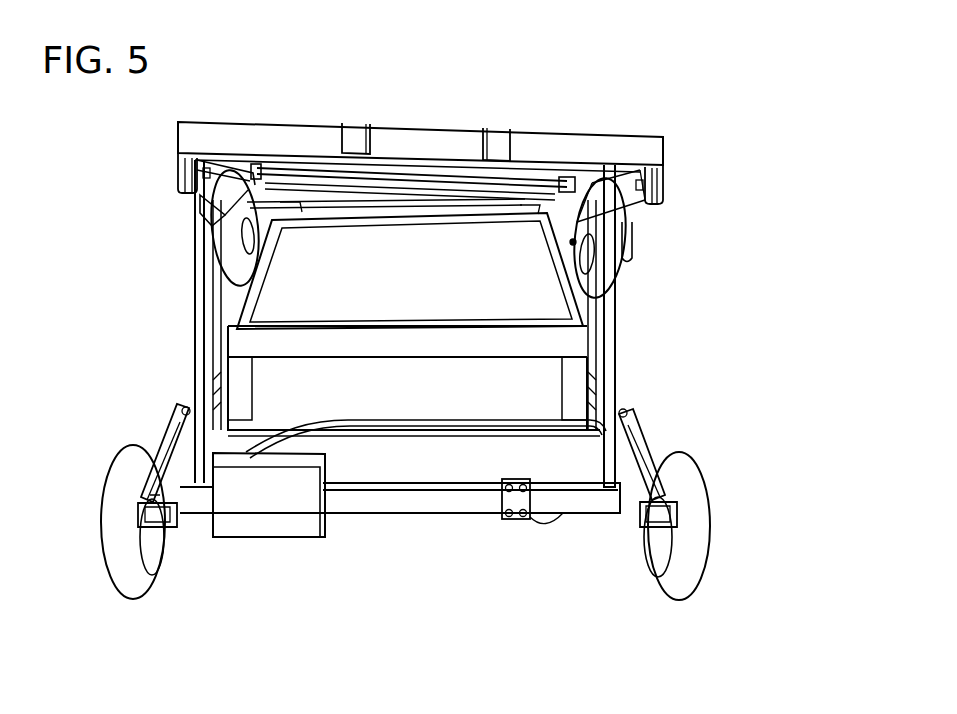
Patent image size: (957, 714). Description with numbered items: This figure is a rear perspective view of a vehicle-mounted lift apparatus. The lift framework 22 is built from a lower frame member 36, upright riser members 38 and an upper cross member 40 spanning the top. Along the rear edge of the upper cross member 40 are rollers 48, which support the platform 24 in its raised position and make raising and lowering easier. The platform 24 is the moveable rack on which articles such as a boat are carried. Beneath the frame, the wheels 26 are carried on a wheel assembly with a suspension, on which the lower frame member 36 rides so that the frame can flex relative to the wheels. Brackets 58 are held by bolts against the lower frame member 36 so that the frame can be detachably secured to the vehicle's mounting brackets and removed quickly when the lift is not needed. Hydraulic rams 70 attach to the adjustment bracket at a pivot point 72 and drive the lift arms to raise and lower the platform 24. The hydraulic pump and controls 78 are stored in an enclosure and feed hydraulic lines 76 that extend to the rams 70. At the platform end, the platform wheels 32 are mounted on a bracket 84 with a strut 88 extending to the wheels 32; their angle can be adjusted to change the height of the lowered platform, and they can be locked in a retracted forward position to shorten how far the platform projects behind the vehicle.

The platform 24 is at (462, 137).
The upper cross member 40 is at (530, 178).
The bracket 84 is at (178, 171).
The strut 88 is at (192, 213).
The rollers 48 is at (276, 216).
The platform wheels 32 is at (256, 272).
The frame 22 is at (625, 318).
The riser members 38 is at (195, 337).
The lower frame member 36 is at (593, 503).
The hydraulic lines 76 is at (375, 428).
The hydraulic rams 70 is at (182, 430).
The wheels 26 is at (115, 480).
The pivot point 72 is at (175, 527).
The hydraulic pump and controls 78 is at (300, 528).
The brackets 58 is at (513, 514).